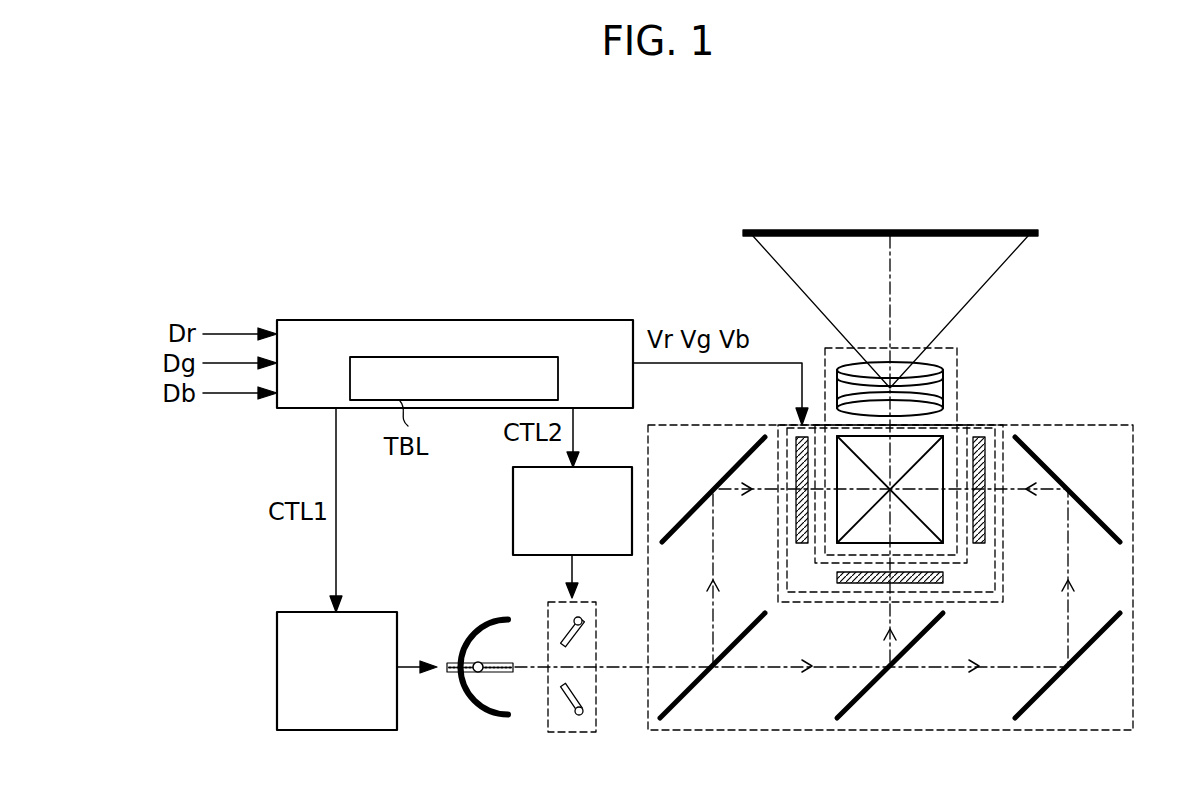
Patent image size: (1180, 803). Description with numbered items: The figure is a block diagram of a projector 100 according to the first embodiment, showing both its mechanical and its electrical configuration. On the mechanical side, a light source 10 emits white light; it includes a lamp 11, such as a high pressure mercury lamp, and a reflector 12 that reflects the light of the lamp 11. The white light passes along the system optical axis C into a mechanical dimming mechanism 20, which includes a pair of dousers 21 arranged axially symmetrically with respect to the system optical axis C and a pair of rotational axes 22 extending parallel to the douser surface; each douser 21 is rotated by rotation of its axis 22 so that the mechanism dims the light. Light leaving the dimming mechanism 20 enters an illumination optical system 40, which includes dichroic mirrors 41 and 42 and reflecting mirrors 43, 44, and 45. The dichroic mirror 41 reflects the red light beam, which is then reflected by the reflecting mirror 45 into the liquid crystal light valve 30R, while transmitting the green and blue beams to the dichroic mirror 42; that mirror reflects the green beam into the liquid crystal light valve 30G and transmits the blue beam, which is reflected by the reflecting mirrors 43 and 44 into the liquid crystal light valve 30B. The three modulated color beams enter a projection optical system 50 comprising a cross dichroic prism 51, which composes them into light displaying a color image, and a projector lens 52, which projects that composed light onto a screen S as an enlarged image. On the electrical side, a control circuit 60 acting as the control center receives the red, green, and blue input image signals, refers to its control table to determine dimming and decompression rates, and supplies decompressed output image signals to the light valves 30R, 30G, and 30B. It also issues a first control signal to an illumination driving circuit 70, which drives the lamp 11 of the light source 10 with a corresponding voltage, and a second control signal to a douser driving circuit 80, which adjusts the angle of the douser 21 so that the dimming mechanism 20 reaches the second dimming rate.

The projector 100 is at (530, 196).
The control circuit 60 is at (326, 320).
The illumination driving circuit 70 is at (293, 612).
The douser driving circuit 80 is at (513, 505).
The light source 10 is at (472, 661).
The lamp 11 is at (476, 662).
The reflector 12 is at (488, 617).
The mechanical dimming mechanism 20 is at (573, 673).
The douser 21 is at (568, 633).
The rotational axis 22 is at (582, 617).
The liquid crystal light valve 30R is at (796, 530).
The liquid crystal light valve 30G is at (843, 585).
The liquid crystal light valve 30B is at (985, 530).
The illumination optical system 40 is at (1103, 425).
The dichroic mirror 41 is at (705, 680).
The dichroic mirror 42 is at (887, 680).
The reflecting mirror 43 is at (1057, 680).
The reflecting mirror 44 is at (1093, 508).
The reflecting mirror 45 is at (722, 480).
The projection optical system 50 is at (957, 396).
The cross dichroic prism 51 is at (935, 433).
The projector lens 52 is at (943, 382).
The screen S is at (933, 238).
The system optical axis C is at (622, 667).